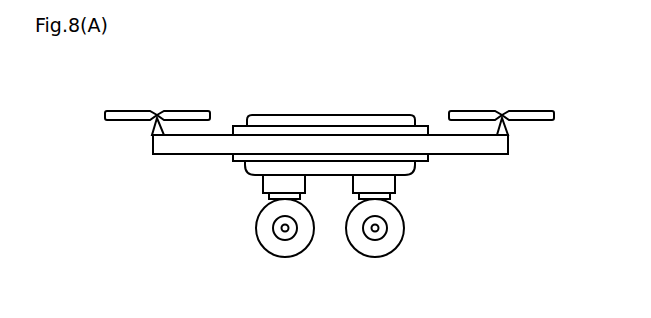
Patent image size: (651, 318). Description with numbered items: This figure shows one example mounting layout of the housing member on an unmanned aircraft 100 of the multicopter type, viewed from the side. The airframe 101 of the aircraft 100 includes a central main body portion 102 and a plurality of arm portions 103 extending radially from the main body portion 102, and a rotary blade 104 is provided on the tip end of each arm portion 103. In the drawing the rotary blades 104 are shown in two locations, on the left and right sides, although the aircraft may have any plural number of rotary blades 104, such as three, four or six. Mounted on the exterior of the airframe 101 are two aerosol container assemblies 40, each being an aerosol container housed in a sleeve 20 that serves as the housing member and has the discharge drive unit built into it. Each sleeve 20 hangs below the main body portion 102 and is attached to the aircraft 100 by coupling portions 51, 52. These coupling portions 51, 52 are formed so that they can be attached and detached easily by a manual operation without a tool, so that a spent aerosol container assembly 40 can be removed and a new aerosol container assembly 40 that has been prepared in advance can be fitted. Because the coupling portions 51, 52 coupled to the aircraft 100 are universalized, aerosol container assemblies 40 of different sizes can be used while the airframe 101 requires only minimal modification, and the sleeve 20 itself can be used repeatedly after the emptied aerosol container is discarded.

The aircraft 100 is at (379, 109).
The airframe 101 is at (328, 114).
The main body portion 102 is at (247, 168).
The arm portion 103 is at (189, 156).
The rotary blade 104 is at (122, 110).
The coupling portion 51 is at (397, 183).
The coupling portion 52 is at (397, 197).
The sleeve 20 is at (319, 249).
The aerosol container assembly 40 is at (270, 253).